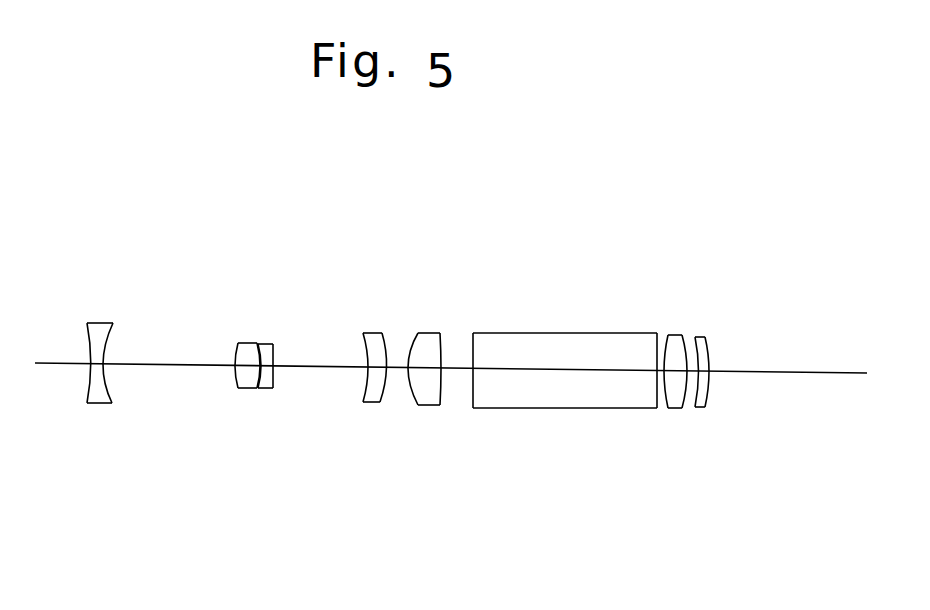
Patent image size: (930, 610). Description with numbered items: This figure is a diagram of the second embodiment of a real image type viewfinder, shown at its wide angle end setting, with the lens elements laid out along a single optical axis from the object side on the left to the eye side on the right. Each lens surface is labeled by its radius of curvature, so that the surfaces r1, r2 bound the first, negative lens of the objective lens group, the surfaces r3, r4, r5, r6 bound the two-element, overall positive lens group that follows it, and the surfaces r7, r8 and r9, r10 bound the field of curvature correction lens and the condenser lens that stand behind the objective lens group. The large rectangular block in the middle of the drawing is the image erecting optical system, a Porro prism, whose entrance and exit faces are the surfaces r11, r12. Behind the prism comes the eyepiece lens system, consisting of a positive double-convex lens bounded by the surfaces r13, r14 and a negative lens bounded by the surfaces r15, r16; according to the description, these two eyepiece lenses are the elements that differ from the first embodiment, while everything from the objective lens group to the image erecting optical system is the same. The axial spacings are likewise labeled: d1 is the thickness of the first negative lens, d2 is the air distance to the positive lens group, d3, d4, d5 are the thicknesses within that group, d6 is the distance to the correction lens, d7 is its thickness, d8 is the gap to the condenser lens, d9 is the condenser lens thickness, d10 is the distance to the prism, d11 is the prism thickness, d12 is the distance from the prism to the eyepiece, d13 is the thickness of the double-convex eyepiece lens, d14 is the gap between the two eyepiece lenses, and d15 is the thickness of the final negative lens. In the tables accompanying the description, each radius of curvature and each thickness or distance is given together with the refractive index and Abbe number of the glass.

The radius of curvature of lens surface r1 is at (84, 311).
The radius of curvature of lens surface r2 is at (111, 326).
The radius of curvature of lens surface r3 is at (229, 304).
The radius of curvature of lens surface r4 is at (256, 319).
The radius of curvature of lens surface r5 is at (277, 304).
The radius of curvature of lens surface r6 is at (297, 319).
The radius of curvature of lens surface r7 is at (362, 311).
The radius of curvature of lens surface r8 is at (390, 326).
The radius of curvature of lens surface r9 is at (417, 312).
The radius of curvature of lens surface r10 is at (451, 327).
The radius of curvature of lens surface r11 is at (479, 314).
The radius of curvature of lens surface r12 is at (654, 331).
The radius of curvature of lens surface r13 is at (680, 315).
The radius of curvature of lens surface r14 is at (704, 331).
The radius of curvature of lens surface r15 is at (724, 314).
The radius of curvature of lens surface r16 is at (743, 331).
The lens thickness d1 is at (92, 425).
The distance between lenses d2 is at (164, 441).
The lens thickness d3 is at (242, 425).
The lens thickness d4 is at (270, 442).
The lens thickness d5 is at (287, 426).
The distance between lenses d6 is at (327, 442).
The lens thickness d7 is at (372, 426).
The distance between lenses d8 is at (400, 442).
The lens thickness d9 is at (427, 426).
The distance between lenses d10 is at (467, 442).
The lens thickness d11 is at (564, 427).
The distance between lenses d12 is at (660, 446).
The lens thickness d13 is at (690, 433).
The distance between lenses d14 is at (715, 446).
The lens thickness d15 is at (735, 435).